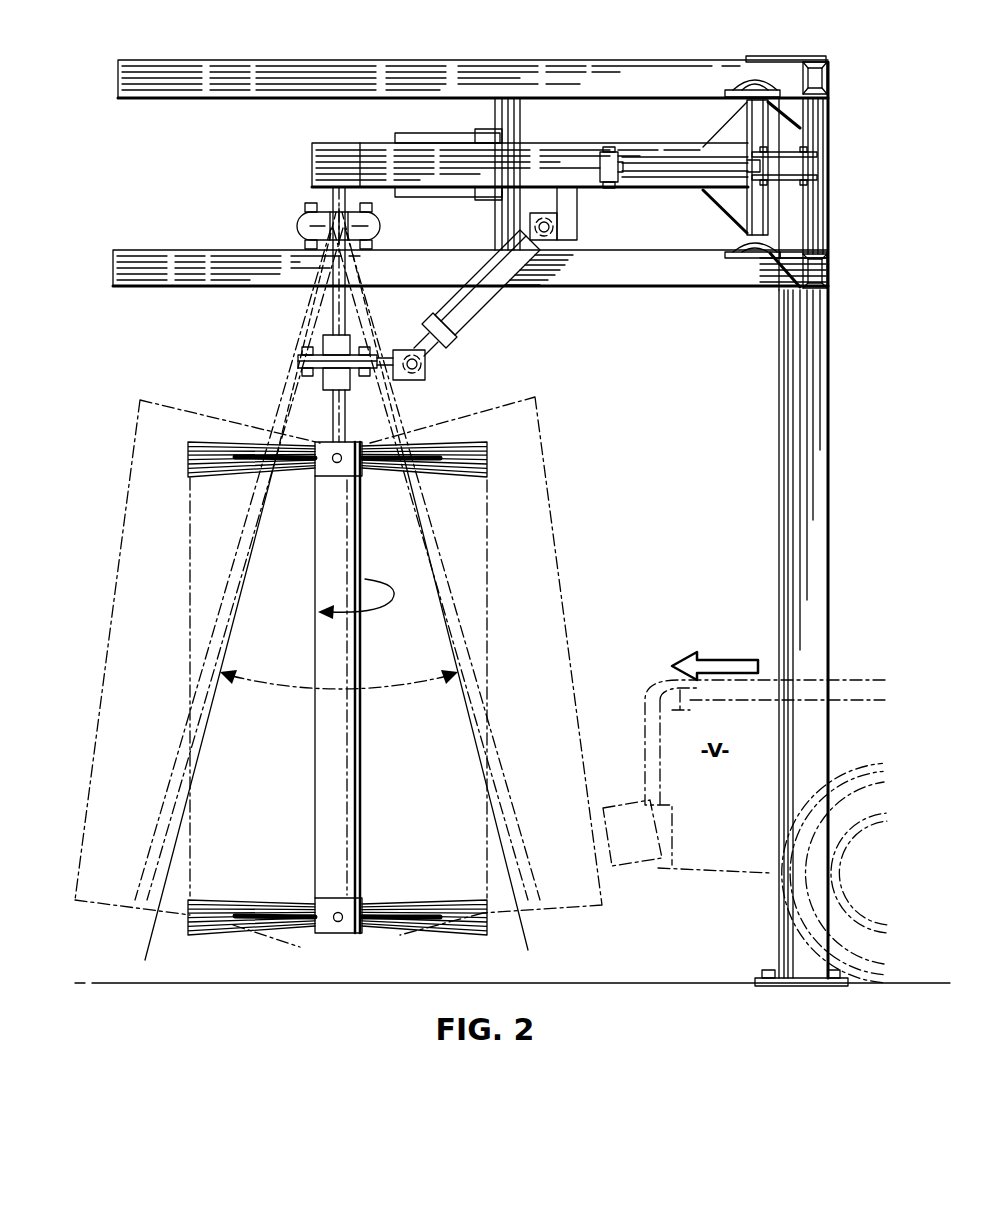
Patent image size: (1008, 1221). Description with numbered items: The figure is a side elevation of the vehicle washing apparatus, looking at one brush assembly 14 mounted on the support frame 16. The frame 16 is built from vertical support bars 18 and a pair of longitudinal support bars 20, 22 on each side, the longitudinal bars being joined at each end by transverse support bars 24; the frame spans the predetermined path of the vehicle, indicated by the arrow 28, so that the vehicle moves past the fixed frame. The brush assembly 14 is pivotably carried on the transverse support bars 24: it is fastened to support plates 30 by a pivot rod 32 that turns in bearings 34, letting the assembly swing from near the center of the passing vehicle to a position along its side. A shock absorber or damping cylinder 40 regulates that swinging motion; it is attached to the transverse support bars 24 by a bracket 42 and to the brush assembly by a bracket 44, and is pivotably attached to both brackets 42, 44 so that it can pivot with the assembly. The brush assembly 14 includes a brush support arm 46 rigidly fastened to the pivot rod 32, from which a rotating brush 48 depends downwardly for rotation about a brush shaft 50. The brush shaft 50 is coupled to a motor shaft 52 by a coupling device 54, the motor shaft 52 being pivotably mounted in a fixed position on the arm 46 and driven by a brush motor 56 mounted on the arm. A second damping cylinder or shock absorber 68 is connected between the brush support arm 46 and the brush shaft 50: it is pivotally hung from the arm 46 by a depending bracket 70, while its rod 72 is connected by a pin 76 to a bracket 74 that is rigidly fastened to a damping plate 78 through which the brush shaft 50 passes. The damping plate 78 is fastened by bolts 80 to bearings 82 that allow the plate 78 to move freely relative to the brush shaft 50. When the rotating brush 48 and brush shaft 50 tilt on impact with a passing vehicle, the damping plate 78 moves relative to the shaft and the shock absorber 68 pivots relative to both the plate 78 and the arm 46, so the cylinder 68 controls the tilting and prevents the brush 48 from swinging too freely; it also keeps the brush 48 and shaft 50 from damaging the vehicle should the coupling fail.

The brush assembly 14 is at (223, 440).
The support frame 16 is at (428, 55).
The vertical support bars 18 is at (790, 426).
The longitudinal support bar 20 is at (233, 60).
The longitudinal support bar 22 is at (187, 255).
The transverse support bar 24 is at (826, 70).
The arrow 28 is at (713, 662).
The support plates 30 is at (786, 88).
The pivot rod 32 is at (747, 214).
The bearings 34 is at (745, 85).
The shock absorber or damping cylinder 40 is at (677, 160).
The bracket 42 is at (790, 152).
The bracket 44 is at (607, 152).
The brush support arm 46 is at (575, 152).
The rotating brush 48 is at (490, 462).
The brush shaft 50 is at (335, 416).
The motor shaft 52 is at (333, 200).
The coupling device 54 is at (290, 224).
The brush motor 56 is at (445, 134).
The damping cylinder or shock absorber 68 is at (488, 290).
The depending bracket 70 is at (566, 218).
The rod 72 is at (442, 340).
The bracket 74 is at (410, 380).
The pin 76 is at (425, 368).
The damping plate 78 is at (384, 355).
The bolts 80 is at (303, 351).
The bearings 82 is at (325, 338).